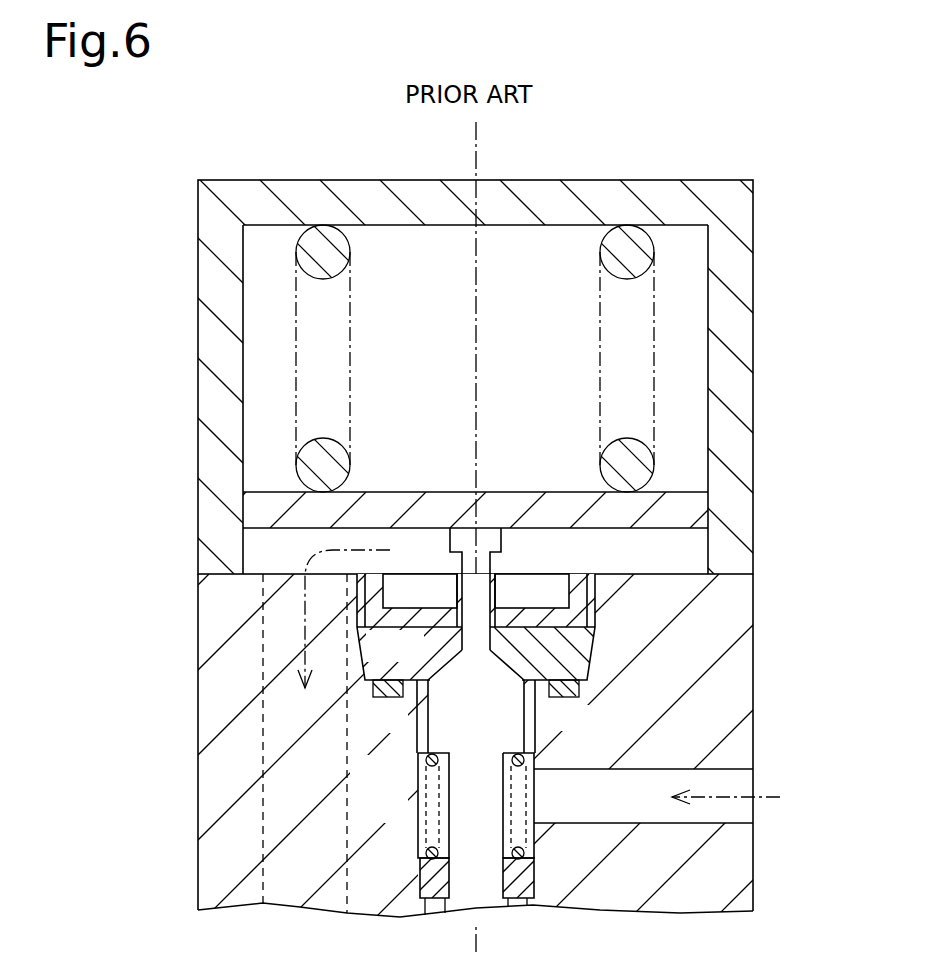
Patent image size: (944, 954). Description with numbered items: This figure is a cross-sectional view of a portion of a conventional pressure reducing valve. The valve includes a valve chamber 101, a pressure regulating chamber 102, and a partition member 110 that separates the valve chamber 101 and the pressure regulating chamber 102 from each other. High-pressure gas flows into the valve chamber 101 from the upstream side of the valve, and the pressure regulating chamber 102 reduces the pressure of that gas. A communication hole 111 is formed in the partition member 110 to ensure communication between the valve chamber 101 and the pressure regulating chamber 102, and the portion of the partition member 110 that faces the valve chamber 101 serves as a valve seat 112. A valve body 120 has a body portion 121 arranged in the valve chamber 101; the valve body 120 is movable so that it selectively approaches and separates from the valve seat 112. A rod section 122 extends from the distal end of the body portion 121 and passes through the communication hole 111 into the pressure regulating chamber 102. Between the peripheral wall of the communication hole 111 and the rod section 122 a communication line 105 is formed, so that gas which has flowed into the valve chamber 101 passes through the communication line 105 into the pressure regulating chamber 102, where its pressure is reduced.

The valve chamber 101 is at (443, 808).
The pressure regulating chamber 102 is at (677, 550).
The communication line 105 is at (453, 640).
The partition member 110 is at (567, 650).
The communication hole 111 is at (505, 650).
The valve seat 112 is at (518, 670).
The valve body 120 is at (455, 722).
The body portion 121 is at (443, 738).
The rod section 122 is at (457, 590).